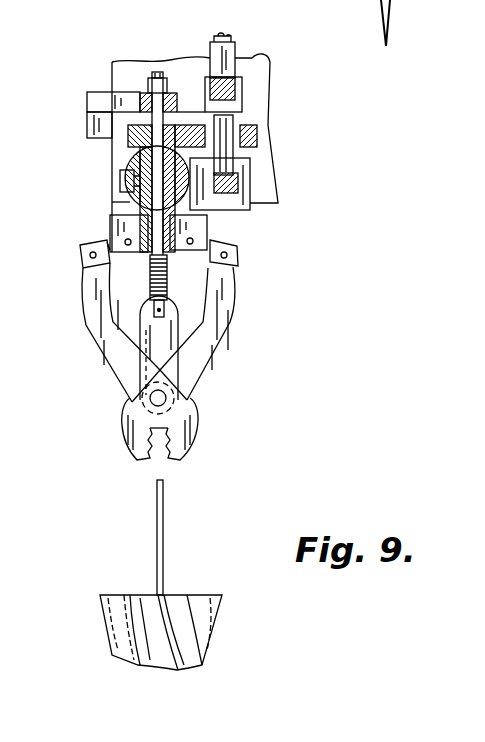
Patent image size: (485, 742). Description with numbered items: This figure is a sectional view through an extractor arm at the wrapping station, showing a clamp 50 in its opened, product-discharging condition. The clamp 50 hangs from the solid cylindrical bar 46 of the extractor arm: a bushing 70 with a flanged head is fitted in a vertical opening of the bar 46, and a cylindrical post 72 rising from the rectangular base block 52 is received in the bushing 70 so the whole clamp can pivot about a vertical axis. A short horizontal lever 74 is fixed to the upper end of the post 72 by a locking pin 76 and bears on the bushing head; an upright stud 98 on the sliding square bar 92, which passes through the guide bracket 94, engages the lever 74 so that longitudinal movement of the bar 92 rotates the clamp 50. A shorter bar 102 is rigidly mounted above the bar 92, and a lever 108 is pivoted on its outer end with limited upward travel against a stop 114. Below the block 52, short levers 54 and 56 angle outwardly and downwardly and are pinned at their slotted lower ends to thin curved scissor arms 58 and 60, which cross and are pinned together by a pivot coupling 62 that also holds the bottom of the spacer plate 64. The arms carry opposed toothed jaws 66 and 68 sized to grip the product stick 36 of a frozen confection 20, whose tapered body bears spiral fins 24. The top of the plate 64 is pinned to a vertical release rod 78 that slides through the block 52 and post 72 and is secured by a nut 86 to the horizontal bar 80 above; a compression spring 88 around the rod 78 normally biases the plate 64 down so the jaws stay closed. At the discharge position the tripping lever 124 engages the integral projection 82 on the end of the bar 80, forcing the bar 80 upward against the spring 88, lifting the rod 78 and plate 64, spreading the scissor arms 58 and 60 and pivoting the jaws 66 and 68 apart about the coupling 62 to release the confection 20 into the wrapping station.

The frozen confection 20 is at (100, 611).
The spiral fins 24 is at (150, 600).
The product stick 36 is at (164, 510).
The solid cylindrical bar 46 is at (150, 195).
The clamp 50 is at (108, 384).
The rectangular base block 52 is at (207, 223).
The short lever 54 is at (92, 262).
The short lever 56 is at (238, 252).
The scissor arm 58 is at (90, 316).
The scissor arm 60 is at (232, 313).
The pivot coupling 62 is at (167, 395).
The spacer plate 64 is at (182, 342).
The jaw 66 is at (181, 462).
The jaw 68 is at (137, 462).
The bushing 70 is at (136, 166).
The cylindrical post 72 is at (126, 180).
The horizontal lever 74 is at (258, 131).
The locking pin 76 is at (176, 134).
The release rod 78 is at (146, 221).
The horizontal bar 80 is at (150, 93).
The integral projection 82 is at (88, 98).
The nut 86 is at (167, 92).
The compression spring 88 is at (168, 284).
The square bar 92 is at (240, 184).
The guide bracket 94 is at (250, 170).
The upright cylindrical stud 98 is at (233, 155).
The shorter bar 102 is at (235, 86).
The lever 108 is at (240, 105).
The stop 114 is at (233, 48).
The tripping lever 124 is at (88, 129).